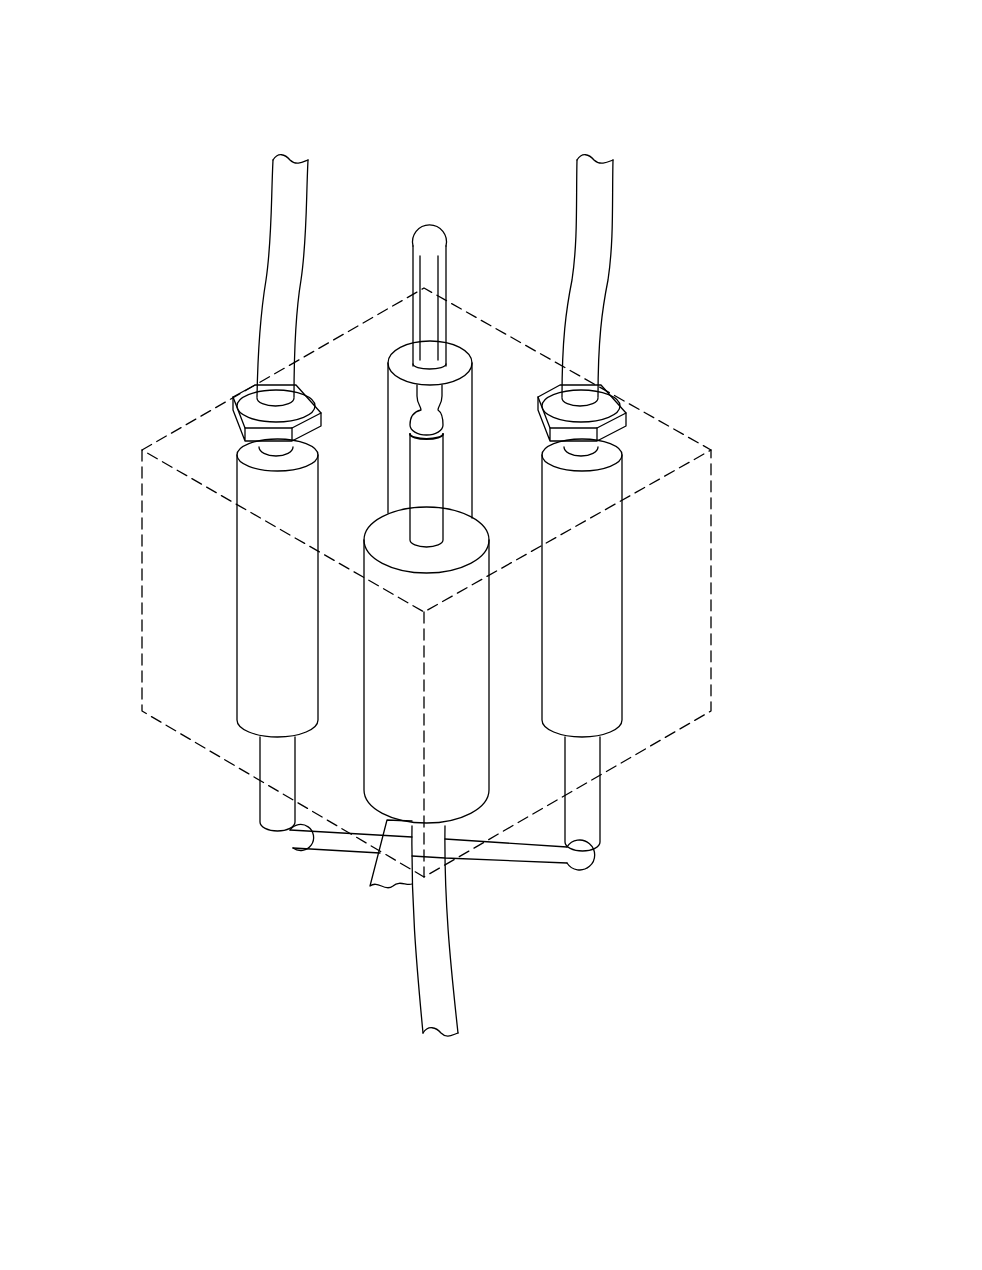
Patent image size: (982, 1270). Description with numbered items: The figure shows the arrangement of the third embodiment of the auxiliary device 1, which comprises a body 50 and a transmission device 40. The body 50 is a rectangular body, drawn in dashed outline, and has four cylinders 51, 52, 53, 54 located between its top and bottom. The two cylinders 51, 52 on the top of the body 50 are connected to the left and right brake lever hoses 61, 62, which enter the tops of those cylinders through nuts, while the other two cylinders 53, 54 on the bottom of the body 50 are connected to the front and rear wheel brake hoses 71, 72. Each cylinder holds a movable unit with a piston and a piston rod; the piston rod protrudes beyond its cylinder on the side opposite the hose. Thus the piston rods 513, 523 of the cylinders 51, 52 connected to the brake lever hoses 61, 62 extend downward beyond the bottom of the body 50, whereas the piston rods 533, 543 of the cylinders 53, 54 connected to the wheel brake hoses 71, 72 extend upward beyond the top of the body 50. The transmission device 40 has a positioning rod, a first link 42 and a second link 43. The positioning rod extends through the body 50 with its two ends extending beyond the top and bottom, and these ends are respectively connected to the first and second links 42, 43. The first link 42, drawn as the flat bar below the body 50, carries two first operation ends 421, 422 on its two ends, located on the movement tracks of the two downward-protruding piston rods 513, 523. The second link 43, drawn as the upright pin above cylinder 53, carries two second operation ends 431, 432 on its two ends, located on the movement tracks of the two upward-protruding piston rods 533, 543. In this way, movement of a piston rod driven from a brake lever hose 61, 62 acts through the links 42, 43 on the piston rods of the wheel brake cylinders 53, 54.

The auxiliary device 1 is at (768, 438).
The transmission device 40 is at (287, 860).
The first link 42 is at (502, 863).
The first operation end 421 is at (593, 857).
The first operation end 422 is at (268, 845).
The second link 43 is at (433, 325).
The second operation end 431 is at (430, 237).
The second operation end 432 is at (418, 421).
The body 50 is at (675, 445).
The cylinder 51 is at (620, 555).
The piston rod 513 is at (600, 789).
The cylinder 52 is at (280, 575).
The piston rod 523 is at (263, 790).
The cylinder 53 is at (463, 393).
The piston rod 533 is at (410, 307).
The cylinder 54 is at (460, 725).
The piston rod 543 is at (437, 487).
The brake lever hose 61 is at (605, 182).
The brake lever hose 62 is at (284, 197).
The wheel brake hose 71 is at (375, 870).
The wheel brake hose 72 is at (420, 1003).